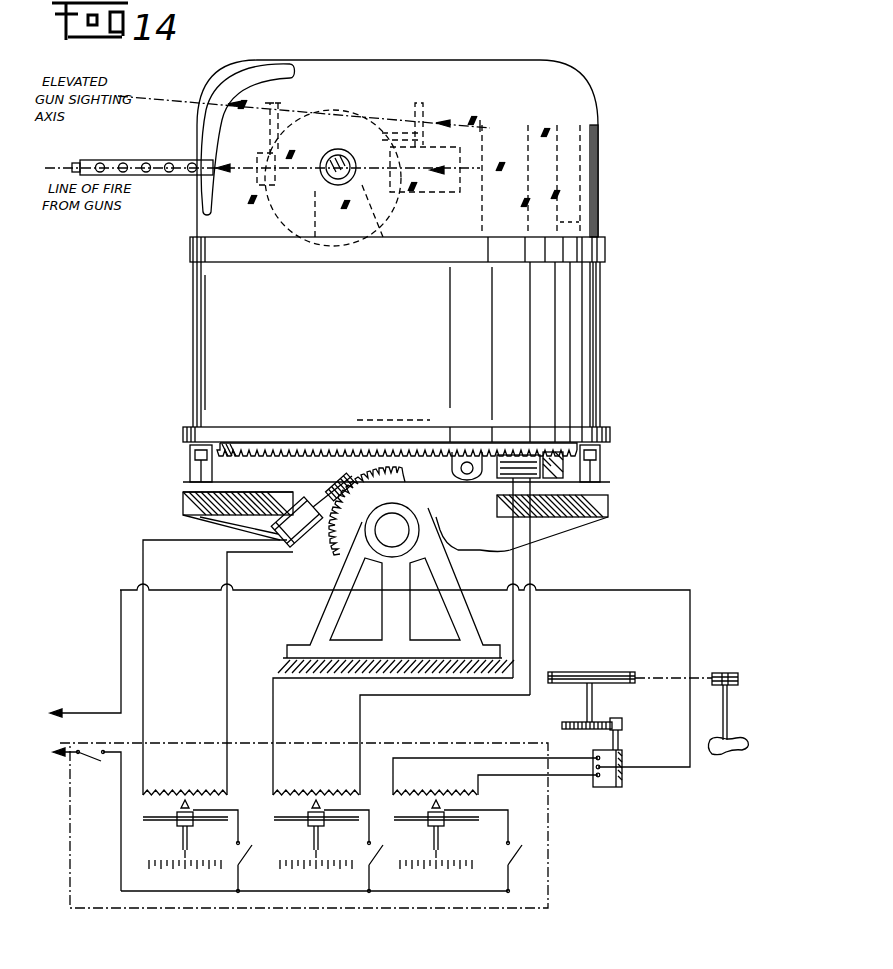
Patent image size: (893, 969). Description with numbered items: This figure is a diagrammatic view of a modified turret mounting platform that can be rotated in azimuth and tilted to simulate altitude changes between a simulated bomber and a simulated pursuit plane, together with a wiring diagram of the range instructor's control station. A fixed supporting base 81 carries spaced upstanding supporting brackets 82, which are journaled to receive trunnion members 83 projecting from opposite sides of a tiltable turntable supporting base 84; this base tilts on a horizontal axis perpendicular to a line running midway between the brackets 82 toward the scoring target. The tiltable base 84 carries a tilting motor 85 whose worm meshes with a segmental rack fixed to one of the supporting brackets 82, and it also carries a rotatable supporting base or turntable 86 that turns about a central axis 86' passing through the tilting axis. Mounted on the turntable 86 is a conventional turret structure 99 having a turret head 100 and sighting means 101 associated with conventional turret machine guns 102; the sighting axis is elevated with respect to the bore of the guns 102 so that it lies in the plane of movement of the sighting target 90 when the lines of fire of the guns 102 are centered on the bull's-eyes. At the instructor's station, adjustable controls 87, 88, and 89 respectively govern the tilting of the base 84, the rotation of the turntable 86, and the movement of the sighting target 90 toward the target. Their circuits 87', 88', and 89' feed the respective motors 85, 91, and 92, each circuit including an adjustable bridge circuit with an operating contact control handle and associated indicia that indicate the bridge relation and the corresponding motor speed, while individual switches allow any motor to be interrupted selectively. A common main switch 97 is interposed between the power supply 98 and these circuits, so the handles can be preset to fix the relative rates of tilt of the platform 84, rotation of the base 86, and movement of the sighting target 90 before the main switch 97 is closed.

The fixed supporting base 81 is at (491, 651).
The supporting brackets 82 is at (327, 616).
The trunnion members 83 is at (385, 526).
The tiltable turntable supporting base 84 is at (493, 548).
The tilting motor 85 is at (300, 548).
The rotatable supporting base or turntable 86 is at (418, 459).
The central axis 86' is at (397, 429).
The adjustable control 87 is at (185, 782).
The circuit 87' is at (218, 667).
The adjustable control 88 is at (316, 782).
The circuit 88' is at (401, 736).
The adjustable control 89 is at (435, 782).
The circuit 89' is at (499, 787).
The sighting target 90 is at (723, 754).
The motor 91 is at (515, 447).
The motor 92 is at (624, 761).
The main switch 97 is at (82, 762).
The power supply 98 is at (352, 746).
The turret structure 99 is at (200, 349).
The turret head 100 is at (580, 190).
The sighting means 101 is at (267, 155).
The turret machine guns 102 is at (147, 161).